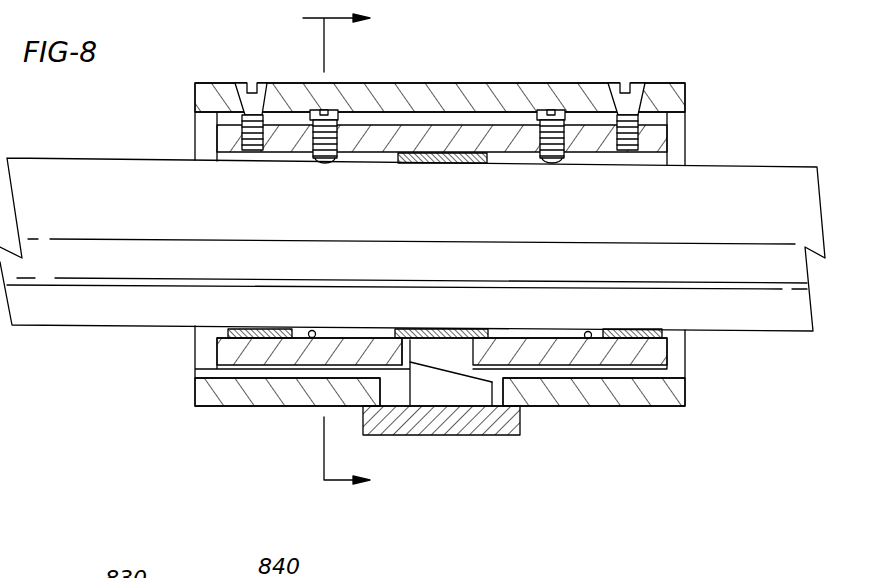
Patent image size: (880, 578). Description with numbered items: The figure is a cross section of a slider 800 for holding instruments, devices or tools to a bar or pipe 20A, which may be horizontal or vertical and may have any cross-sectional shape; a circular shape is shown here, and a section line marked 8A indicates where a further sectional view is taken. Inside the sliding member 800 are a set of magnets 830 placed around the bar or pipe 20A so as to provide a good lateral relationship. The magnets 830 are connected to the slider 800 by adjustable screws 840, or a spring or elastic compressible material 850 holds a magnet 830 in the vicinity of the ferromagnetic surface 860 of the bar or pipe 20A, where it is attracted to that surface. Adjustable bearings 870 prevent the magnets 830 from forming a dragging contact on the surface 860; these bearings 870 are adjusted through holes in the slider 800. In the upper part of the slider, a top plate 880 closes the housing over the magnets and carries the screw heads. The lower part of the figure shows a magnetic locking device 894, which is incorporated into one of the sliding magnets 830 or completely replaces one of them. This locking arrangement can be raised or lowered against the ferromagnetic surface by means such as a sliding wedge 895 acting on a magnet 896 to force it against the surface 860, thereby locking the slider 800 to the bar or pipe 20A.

The bar or pipe 20A is at (737, 165).
The slider 800 is at (687, 140).
The top plate 880 is at (338, 83).
The magnets 830 is at (423, 128).
The adjustable screws 840 is at (240, 83).
The adjustable bearings 870 is at (311, 83).
The spring or elastic compressible material 850 is at (628, 333).
The ferromagnetic surface 860 is at (337, 328).
The magnet 896 is at (657, 353).
The magnetic locking device 894 is at (520, 430).
The sliding wedge 895 is at (438, 372).
The section line 8A is at (352, 256).